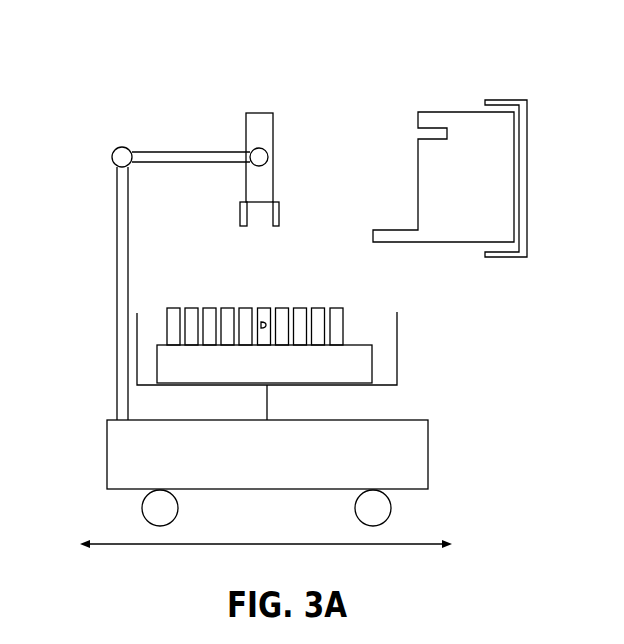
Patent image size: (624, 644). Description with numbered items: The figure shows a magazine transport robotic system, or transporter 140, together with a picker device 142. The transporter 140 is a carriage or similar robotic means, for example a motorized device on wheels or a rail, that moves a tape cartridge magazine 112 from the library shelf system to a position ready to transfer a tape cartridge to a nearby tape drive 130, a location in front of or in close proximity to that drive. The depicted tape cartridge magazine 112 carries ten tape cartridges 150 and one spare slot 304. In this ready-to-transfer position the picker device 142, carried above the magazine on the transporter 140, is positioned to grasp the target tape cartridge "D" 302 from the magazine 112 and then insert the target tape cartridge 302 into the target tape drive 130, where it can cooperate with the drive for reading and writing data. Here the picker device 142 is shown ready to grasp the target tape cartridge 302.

The tape drive 130 is at (462, 112).
The picker device 142 is at (273, 121).
The tape cartridges 150 is at (229, 280).
The target tape cartridge "D" 302 is at (266, 308).
The spare slot 304 is at (359, 330).
The tape cartridge magazine 112 is at (370, 343).
The transporter 140 is at (107, 458).